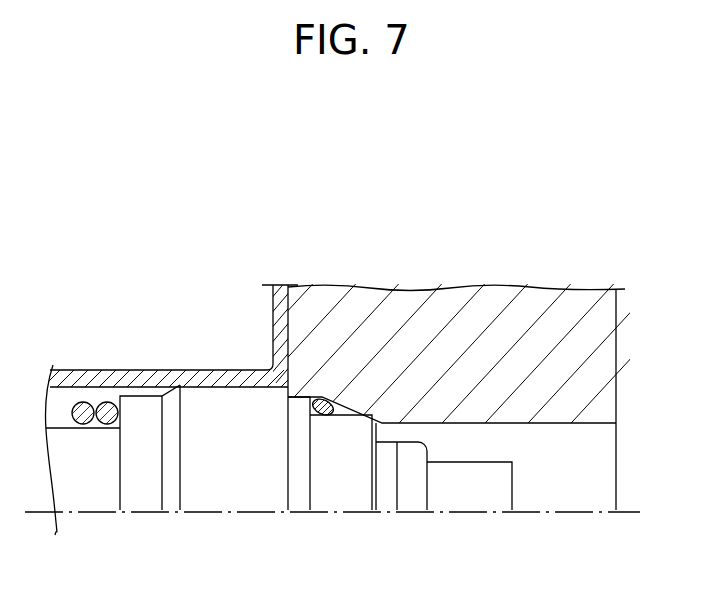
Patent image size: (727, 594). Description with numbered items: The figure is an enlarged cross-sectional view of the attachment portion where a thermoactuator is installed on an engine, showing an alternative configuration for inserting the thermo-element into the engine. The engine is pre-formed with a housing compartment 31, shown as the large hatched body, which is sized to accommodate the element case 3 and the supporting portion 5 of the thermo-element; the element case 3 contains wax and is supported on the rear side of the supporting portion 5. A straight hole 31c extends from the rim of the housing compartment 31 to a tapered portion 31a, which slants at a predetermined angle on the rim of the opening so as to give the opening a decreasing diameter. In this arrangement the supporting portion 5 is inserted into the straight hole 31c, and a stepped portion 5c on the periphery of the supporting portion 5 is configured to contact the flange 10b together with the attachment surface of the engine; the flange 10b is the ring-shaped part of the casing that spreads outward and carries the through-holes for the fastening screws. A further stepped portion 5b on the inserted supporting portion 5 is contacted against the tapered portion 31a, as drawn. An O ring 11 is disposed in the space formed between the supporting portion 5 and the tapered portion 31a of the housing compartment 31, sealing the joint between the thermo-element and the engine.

The element case 3 is at (492, 495).
The supporting portion 5 is at (203, 493).
The stepped portion 5b is at (372, 446).
The stepped portion 5c is at (287, 400).
The flange 10b is at (268, 318).
The O ring 11 is at (321, 398).
The housing compartment 31 is at (583, 424).
The tapered portion 31a is at (373, 420).
The straight hole 31c is at (300, 400).